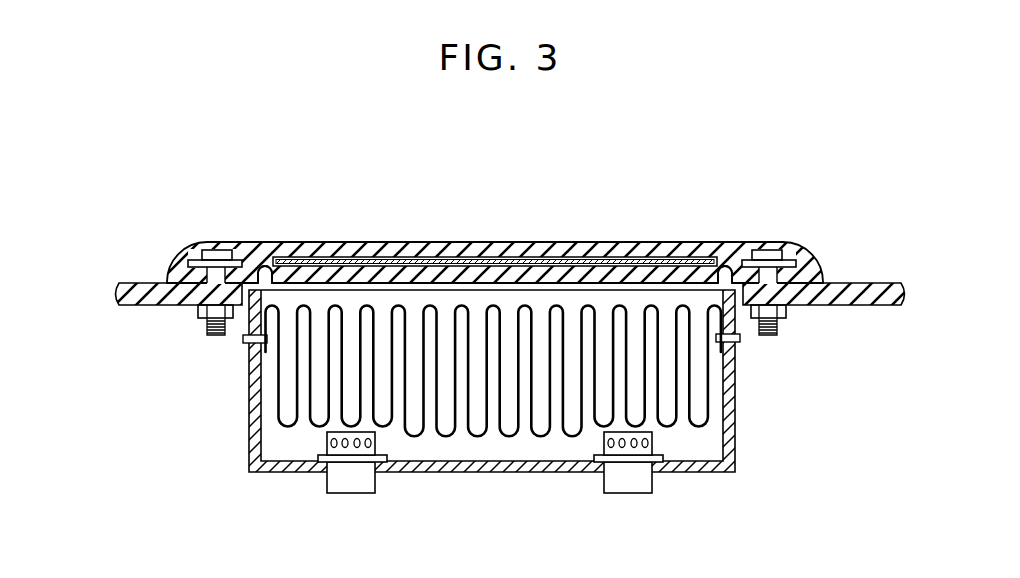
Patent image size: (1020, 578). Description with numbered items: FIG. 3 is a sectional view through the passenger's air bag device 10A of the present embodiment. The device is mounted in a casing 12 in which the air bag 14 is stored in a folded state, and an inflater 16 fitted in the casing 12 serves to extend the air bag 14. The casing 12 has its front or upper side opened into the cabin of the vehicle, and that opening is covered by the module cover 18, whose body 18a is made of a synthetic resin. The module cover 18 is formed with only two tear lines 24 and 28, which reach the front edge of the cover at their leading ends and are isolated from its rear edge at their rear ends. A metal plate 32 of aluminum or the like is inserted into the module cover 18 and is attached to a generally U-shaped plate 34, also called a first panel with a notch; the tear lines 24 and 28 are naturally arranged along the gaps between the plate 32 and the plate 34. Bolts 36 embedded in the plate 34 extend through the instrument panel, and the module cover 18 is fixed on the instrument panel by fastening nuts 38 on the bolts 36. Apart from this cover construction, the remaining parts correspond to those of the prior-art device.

The passenger's air bag device 10A is at (510, 244).
The casing 12 is at (736, 389).
The air bag 14 is at (712, 416).
The inflater 16 is at (371, 480).
The module cover 18 is at (495, 208).
The body 18a is at (673, 241).
The tear line 24 is at (267, 267).
The tear line 28 is at (722, 267).
The plate 32 is at (397, 257).
The generally U-shaped plate 34 is at (235, 257).
The bolt 36 is at (210, 268).
The nut 38 is at (200, 313).